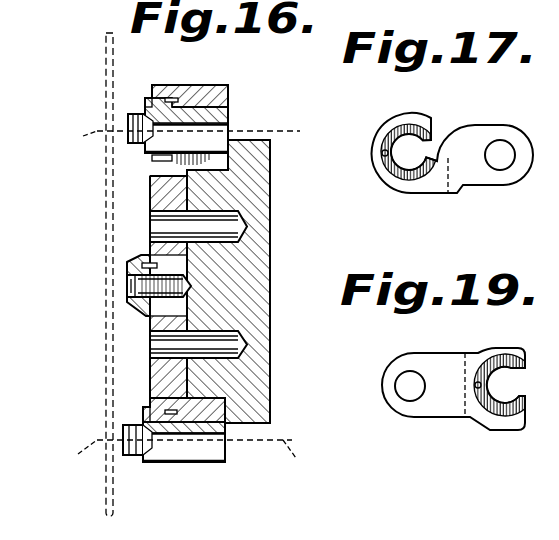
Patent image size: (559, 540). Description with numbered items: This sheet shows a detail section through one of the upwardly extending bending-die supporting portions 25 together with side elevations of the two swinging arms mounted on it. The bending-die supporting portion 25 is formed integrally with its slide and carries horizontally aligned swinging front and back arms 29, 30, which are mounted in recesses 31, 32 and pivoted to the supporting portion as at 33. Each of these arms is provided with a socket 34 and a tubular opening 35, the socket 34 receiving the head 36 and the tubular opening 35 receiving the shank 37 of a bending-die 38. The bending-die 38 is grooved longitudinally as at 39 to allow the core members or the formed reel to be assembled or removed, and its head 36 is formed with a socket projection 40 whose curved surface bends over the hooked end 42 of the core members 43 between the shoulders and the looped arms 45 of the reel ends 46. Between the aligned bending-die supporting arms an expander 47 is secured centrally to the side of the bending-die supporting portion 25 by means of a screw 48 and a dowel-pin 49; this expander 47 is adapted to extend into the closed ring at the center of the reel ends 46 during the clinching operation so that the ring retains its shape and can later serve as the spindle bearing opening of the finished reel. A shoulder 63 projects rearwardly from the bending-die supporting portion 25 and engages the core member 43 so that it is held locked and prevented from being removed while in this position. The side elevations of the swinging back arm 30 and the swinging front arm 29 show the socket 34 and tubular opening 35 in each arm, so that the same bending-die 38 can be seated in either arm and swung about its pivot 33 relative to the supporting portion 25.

In FIG. 16, the bending-die supporting portion 25 is at (258, 279).
In FIG. 16, the swinging front arm 29 is at (188, 398).
In FIG. 19, the swinging front arm 29 is at (447, 408).
In FIG. 16, the swinging back arm 30 is at (229, 95).
In FIG. 17, the swinging back arm 30 is at (475, 173).
In FIG. 16, the recess 31 is at (188, 328).
In FIG. 16, the recess 32 is at (188, 205).
In FIG. 16, the pivot 33 is at (240, 217).
In FIG. 16, the socket 34 is at (171, 96).
In FIG. 17, the socket 34 is at (413, 178).
In FIG. 19, the socket 34 is at (495, 355).
In FIG. 16, the tubular opening 35 is at (204, 100).
In FIG. 17, the tubular opening 35 is at (407, 140).
In FIG. 19, the tubular opening 35 is at (507, 400).
In FIG. 16, the head 36 is at (147, 101).
In FIG. 16, the shank 37 is at (229, 113).
In FIG. 16, the bending-die 38 is at (157, 128).
In FIG. 16, the longitudinal groove 39 is at (187, 445).
In FIG. 16, the socket projection 40 is at (130, 117).
In FIG. 16, the hooked end 42 is at (63, 300).
In FIG. 16, the core member 43 is at (223, 295).
In FIG. 19, the looped arm 45 is at (504, 525).
In FIG. 16, the reel end 46 is at (103, 501).
In FIG. 16, the expander 47 is at (135, 312).
In FIG. 16, the screw 48 is at (130, 289).
In FIG. 16, the dowel-pin 49 is at (135, 262).
In FIG. 16, the shoulder 63 is at (272, 150).